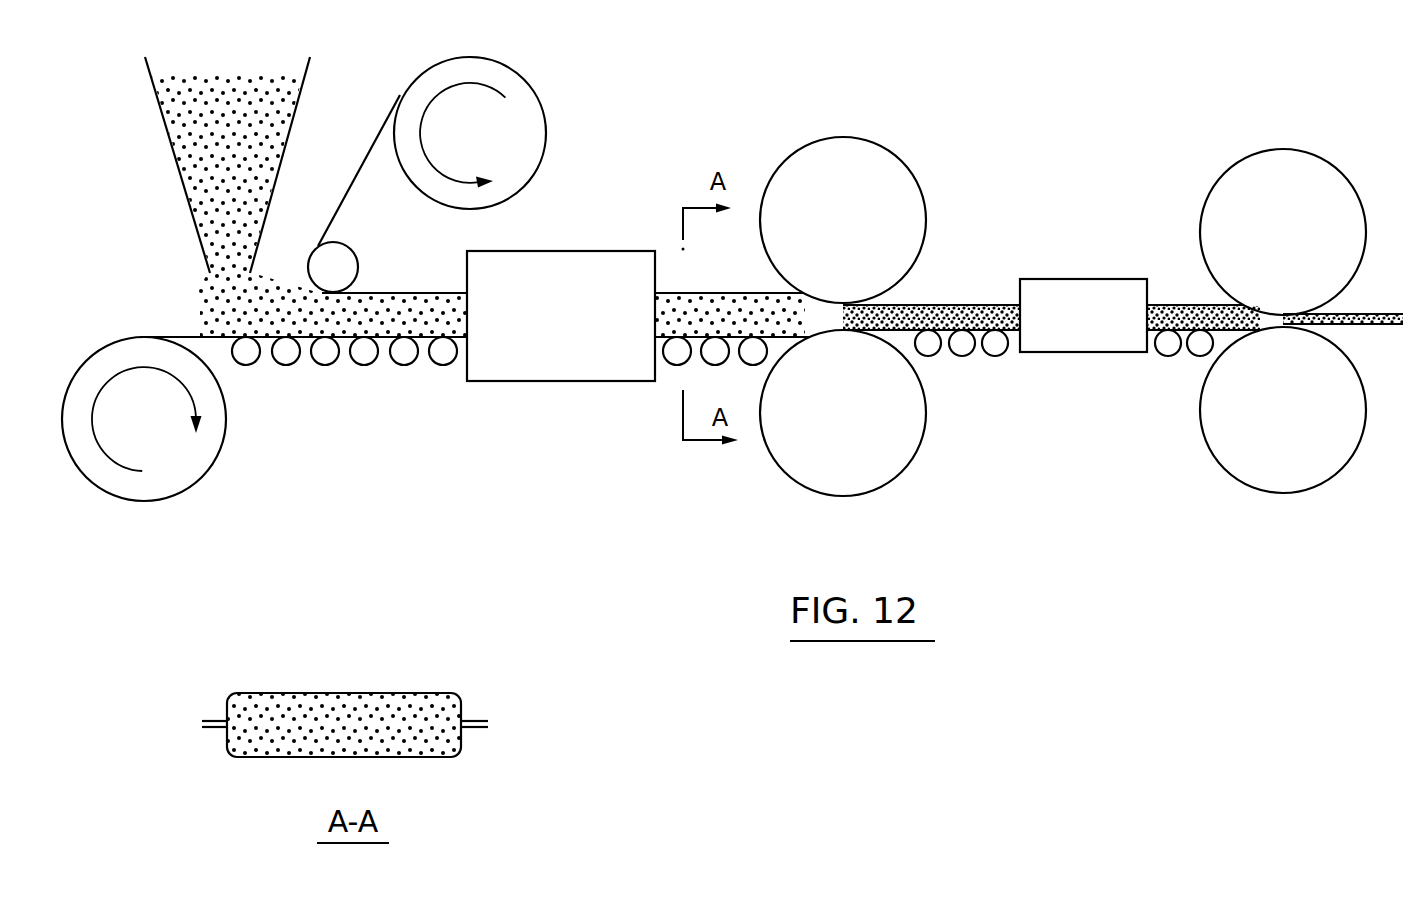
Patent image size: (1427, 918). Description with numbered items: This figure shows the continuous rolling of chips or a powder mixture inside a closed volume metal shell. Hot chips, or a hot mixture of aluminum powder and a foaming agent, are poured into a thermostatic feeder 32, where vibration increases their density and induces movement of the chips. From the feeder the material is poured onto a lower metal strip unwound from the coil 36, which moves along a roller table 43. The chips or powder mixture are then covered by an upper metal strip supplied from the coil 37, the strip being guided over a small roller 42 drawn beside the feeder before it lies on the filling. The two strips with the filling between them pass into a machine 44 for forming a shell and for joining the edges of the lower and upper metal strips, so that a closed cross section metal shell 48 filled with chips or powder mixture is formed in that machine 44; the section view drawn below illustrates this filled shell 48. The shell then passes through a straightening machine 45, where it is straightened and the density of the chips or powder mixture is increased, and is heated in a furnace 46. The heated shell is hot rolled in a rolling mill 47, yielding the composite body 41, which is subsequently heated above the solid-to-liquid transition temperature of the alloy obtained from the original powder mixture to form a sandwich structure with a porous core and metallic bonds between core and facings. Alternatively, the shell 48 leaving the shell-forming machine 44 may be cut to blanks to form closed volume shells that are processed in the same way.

The thermostatic feeder 32 is at (205, 100).
The coil 36 is at (185, 477).
The coil 37 is at (528, 100).
The composite body 41 is at (1383, 314).
The guide roller 42 is at (343, 270).
The roller table 43 is at (364, 355).
The machine for forming a shell 44 is at (607, 250).
The straightening machine 45 is at (836, 145).
The furnace 46 is at (1075, 288).
The rolling mill 47 is at (1256, 163).
The closed cross section metal shell 48 is at (383, 700).